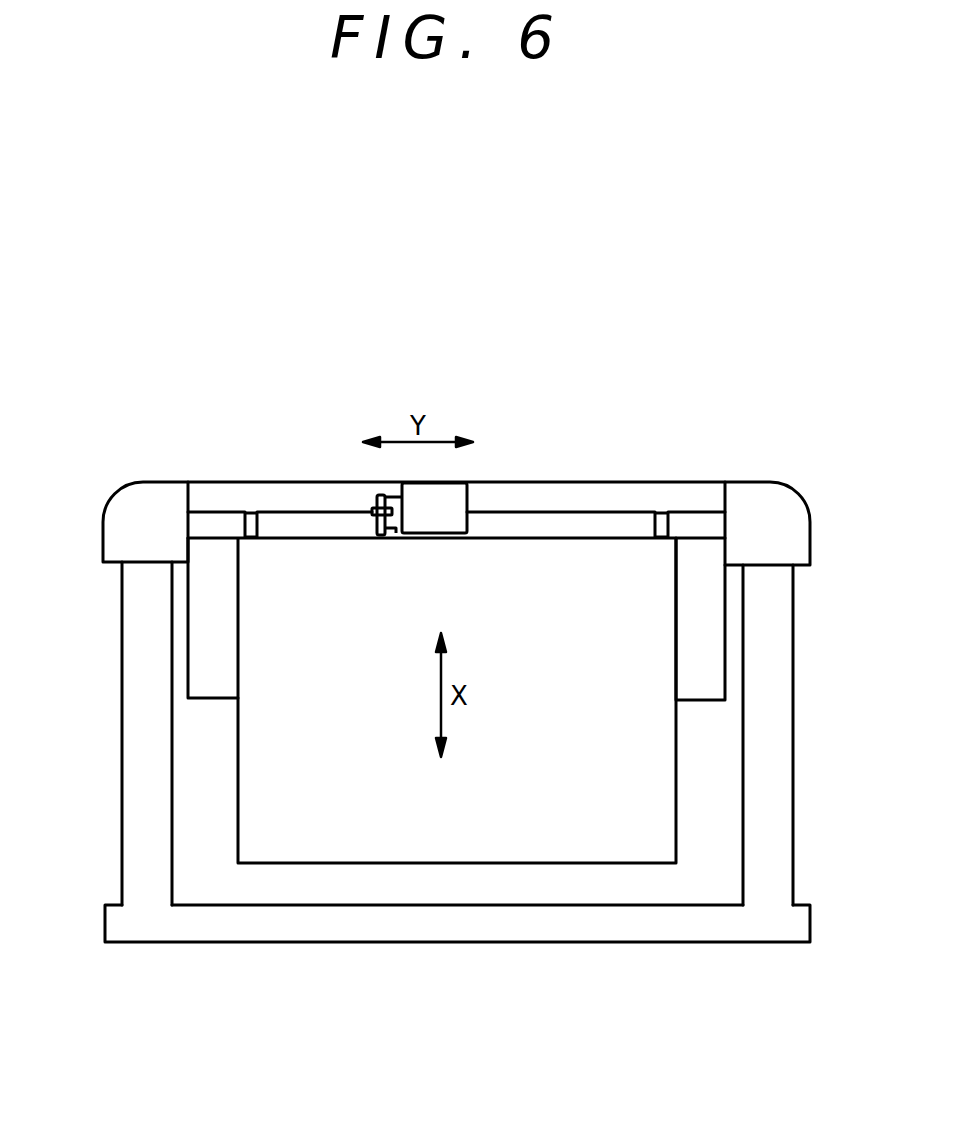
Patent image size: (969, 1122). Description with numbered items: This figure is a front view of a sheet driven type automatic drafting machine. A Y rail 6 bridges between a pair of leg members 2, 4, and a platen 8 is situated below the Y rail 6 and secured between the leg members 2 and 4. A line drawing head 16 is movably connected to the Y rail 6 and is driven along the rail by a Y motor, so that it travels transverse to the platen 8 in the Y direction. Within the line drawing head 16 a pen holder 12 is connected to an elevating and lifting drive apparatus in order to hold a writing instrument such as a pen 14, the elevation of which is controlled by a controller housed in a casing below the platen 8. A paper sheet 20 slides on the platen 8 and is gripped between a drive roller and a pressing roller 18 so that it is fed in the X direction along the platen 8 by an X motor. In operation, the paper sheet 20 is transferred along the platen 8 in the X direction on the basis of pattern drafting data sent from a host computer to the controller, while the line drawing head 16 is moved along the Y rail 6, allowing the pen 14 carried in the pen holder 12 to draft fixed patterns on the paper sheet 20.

The leg member 2 is at (135, 690).
The leg member 4 is at (777, 795).
The Y rail 6 is at (560, 492).
The platen 8 is at (713, 643).
The pen holder 12 is at (392, 533).
The pen 14 is at (365, 495).
The line drawing head 16 is at (452, 497).
The pressing roller 18 is at (245, 513).
The paper sheet 20 is at (662, 738).